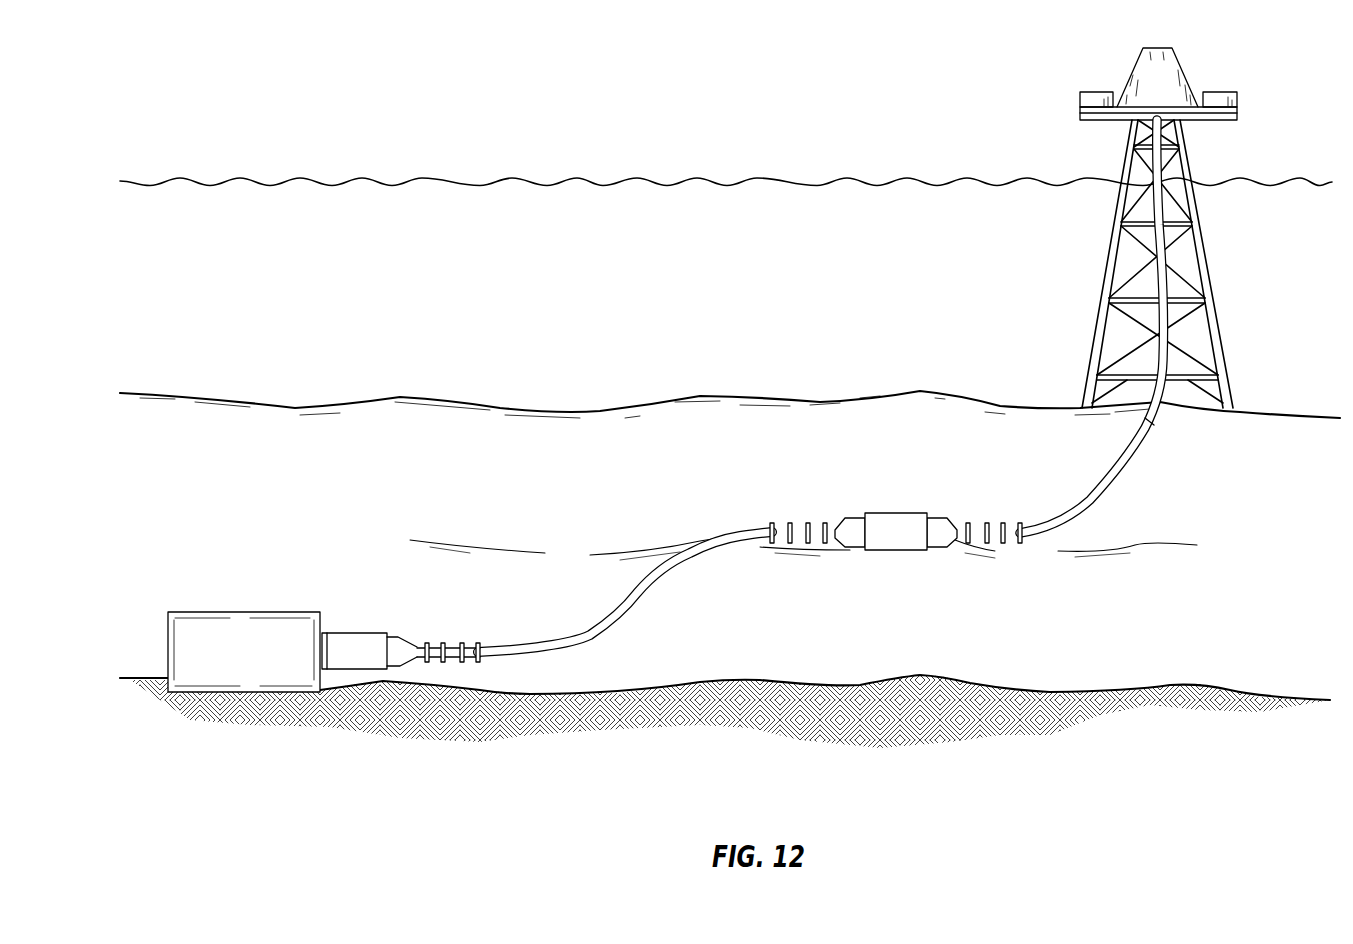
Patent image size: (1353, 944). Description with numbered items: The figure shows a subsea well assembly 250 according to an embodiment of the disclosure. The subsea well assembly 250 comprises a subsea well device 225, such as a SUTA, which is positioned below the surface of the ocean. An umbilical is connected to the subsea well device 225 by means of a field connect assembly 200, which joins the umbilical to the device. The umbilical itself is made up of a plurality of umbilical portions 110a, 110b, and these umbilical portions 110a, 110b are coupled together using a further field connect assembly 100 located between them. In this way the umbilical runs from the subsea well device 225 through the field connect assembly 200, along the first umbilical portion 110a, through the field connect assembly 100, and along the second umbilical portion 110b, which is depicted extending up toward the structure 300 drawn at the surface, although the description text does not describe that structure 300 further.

The field connect assembly 100 is at (893, 513).
The umbilical portion 110a is at (665, 578).
The umbilical portion 110b is at (1125, 466).
The field connect assembly 200 is at (362, 634).
The subsea well device 225 is at (293, 612).
The subsea well assembly 250 is at (496, 178).
The offshore platform / rig 300 is at (1226, 80).